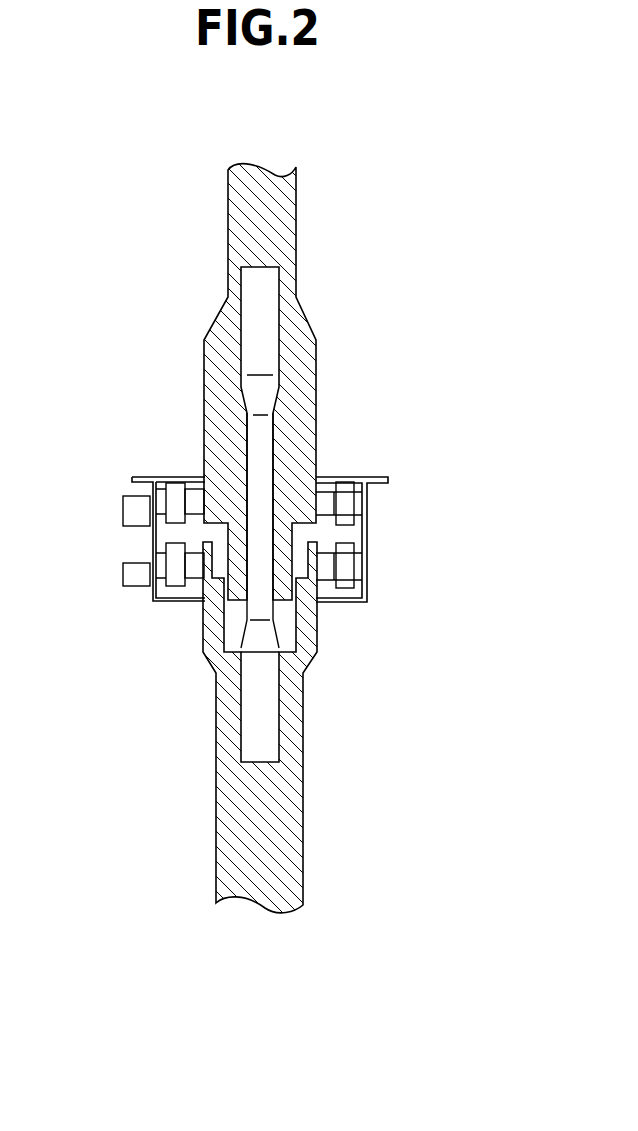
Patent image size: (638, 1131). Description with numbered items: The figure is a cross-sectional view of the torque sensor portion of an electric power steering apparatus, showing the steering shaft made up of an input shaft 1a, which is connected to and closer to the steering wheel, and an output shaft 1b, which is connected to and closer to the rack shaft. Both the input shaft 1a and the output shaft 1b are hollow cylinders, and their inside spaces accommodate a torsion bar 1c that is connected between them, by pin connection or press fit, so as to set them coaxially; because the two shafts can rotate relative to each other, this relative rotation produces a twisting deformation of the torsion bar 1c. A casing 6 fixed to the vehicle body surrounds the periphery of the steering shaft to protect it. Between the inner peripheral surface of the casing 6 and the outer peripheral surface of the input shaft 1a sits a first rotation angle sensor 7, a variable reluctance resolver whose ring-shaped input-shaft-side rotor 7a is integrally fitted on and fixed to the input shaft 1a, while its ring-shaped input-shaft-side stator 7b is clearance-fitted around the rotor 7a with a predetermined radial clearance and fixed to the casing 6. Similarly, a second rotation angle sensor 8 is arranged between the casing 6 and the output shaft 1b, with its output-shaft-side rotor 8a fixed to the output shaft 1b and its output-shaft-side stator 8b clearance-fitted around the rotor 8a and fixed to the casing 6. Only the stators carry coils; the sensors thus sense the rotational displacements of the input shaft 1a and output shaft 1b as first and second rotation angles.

The input shaft 1a is at (288, 232).
The output shaft 1b is at (290, 820).
The torsion bar 1c is at (272, 437).
The casing 6 is at (152, 490).
The first rotation angle sensor 7 is at (217, 427).
The input-shaft-side rotor 7a is at (197, 496).
The input-shaft-side stator 7b is at (172, 494).
The second rotation angle sensor 8 is at (216, 638).
The output-shaft-side rotor 8a is at (195, 583).
The output-shaft-side stator 8b is at (171, 588).